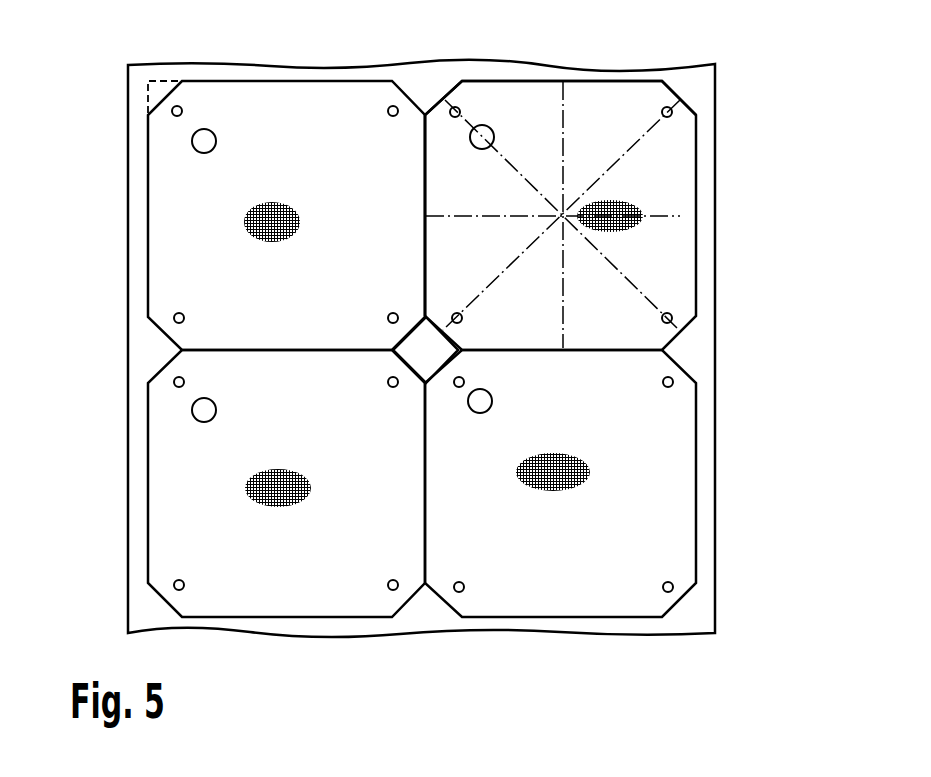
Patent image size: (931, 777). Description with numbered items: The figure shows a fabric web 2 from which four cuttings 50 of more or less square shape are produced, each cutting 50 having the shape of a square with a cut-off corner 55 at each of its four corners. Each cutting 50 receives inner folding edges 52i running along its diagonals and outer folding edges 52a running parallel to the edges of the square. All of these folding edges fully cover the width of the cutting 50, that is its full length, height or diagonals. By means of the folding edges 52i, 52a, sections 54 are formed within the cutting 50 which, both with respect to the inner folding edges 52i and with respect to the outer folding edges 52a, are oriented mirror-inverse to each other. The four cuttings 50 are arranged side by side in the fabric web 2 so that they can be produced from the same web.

The fabric web 2 is at (695, 83).
The cutting 50 is at (673, 240).
The outer folding edge 52a is at (565, 97).
The inner folding edge 52i is at (467, 117).
The section 54 is at (447, 162).
The corner 55 is at (158, 88).